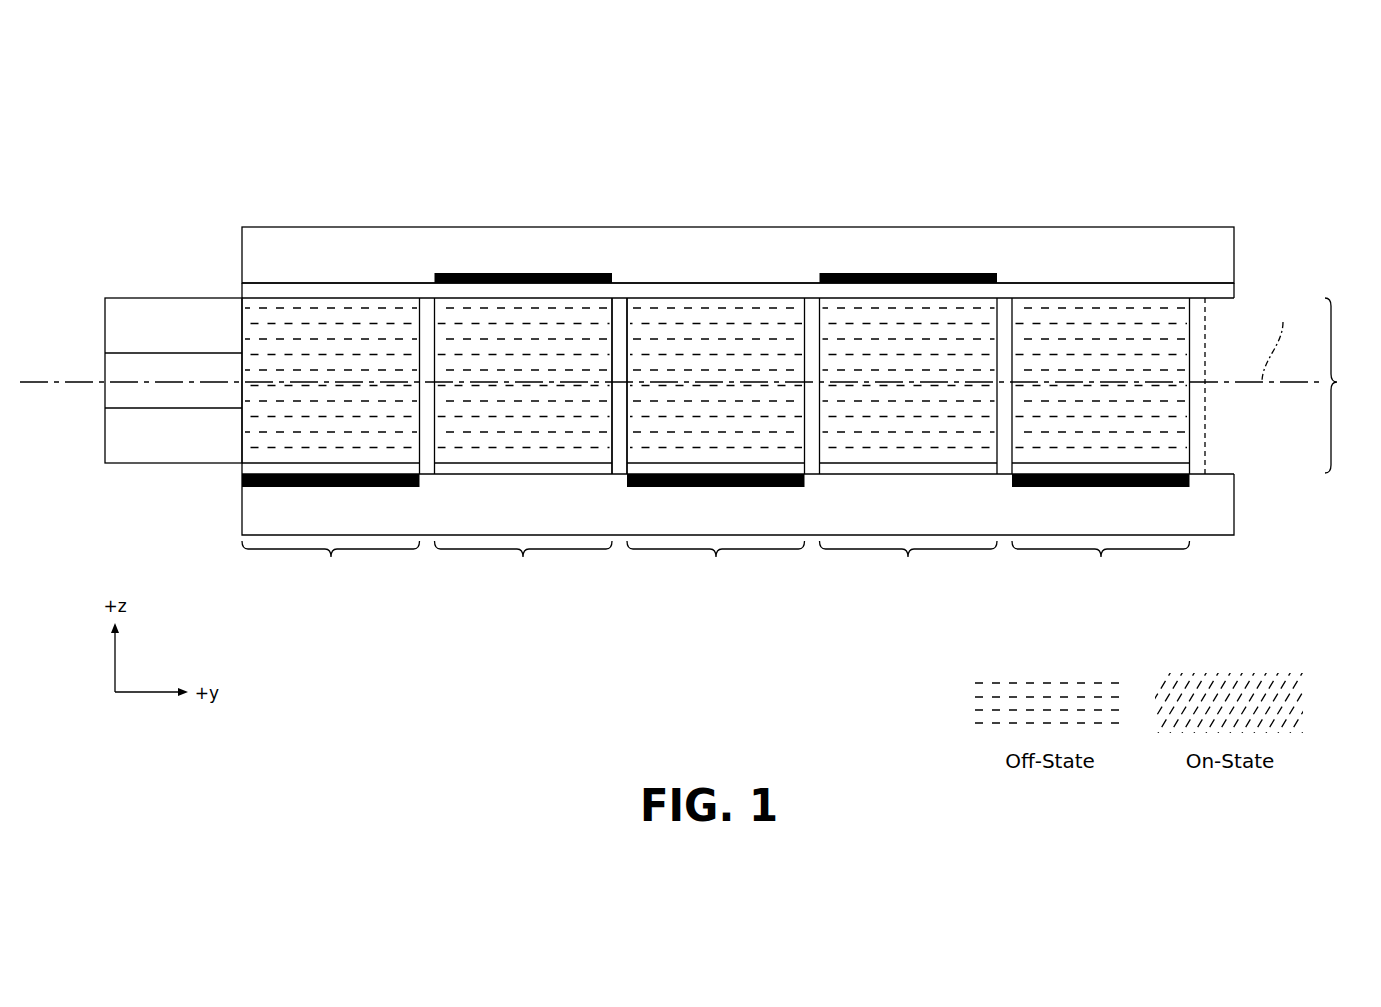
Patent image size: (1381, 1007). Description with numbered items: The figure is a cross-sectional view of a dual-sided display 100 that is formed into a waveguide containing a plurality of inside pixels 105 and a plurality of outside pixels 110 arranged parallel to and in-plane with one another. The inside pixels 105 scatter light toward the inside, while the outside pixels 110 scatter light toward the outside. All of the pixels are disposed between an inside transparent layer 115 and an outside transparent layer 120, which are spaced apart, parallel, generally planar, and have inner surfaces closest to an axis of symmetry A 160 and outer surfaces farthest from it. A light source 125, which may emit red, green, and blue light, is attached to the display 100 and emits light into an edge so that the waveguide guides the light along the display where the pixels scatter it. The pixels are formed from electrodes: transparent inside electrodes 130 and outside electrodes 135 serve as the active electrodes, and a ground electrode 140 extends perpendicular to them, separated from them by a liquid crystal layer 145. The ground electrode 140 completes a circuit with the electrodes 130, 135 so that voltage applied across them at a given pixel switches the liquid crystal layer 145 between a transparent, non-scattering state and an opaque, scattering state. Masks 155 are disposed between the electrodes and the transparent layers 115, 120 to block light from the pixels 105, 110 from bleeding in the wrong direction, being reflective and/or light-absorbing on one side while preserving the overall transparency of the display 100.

The dual-sided display 100 is at (1224, 108).
The inside pixels 105 is at (1199, 600).
The outside pixels 110 is at (716, 563).
The inside transparent layer 115 is at (1245, 500).
The outside transparent layer 120 is at (1245, 256).
The light source 125 is at (105, 322).
The inside electrodes 130 is at (545, 468).
The outside electrodes 135 is at (250, 466).
The ground electrode 140 is at (361, 287).
The liquid crystal layer 145 is at (1292, 386).
The masks 155 is at (524, 274).
The axis of symmetry A 160 is at (620, 316).